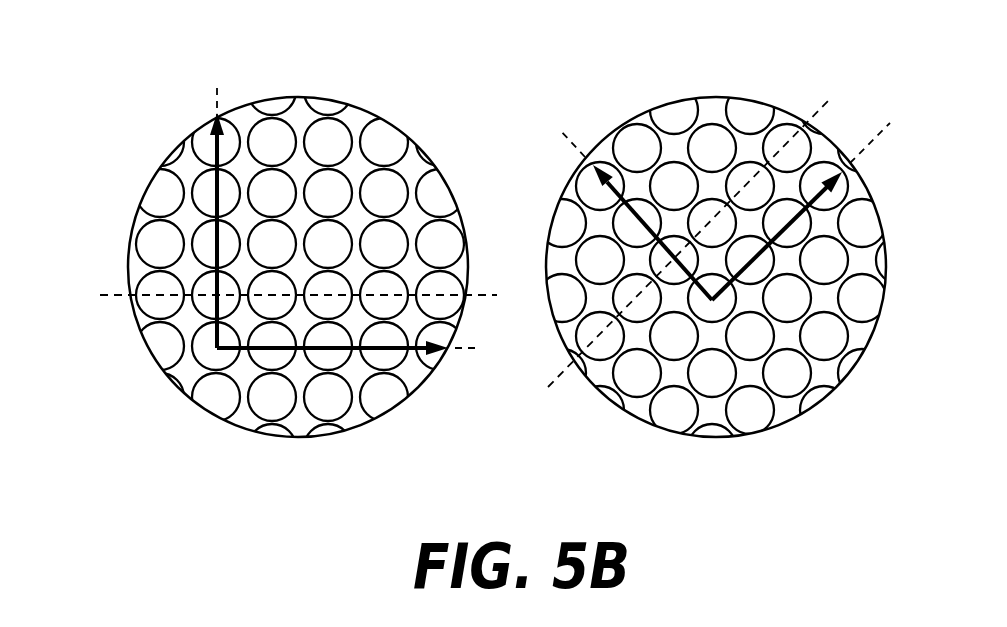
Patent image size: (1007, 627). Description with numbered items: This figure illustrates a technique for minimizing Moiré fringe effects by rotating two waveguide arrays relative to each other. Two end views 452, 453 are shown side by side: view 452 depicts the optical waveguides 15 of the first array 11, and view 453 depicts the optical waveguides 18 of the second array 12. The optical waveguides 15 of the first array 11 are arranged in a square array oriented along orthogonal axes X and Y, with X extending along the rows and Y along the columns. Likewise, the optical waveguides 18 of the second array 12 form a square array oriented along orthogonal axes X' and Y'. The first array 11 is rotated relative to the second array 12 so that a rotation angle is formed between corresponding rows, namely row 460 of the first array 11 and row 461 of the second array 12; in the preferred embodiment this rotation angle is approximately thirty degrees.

The first array 11 is at (314, 97).
The second array 12 is at (742, 97).
The optical waveguides 15 is at (327, 393).
The optical waveguides 18 is at (793, 380).
The view 452 is at (140, 164).
The view 453 is at (958, 262).
The row 460 is at (112, 297).
The row 461 is at (832, 97).